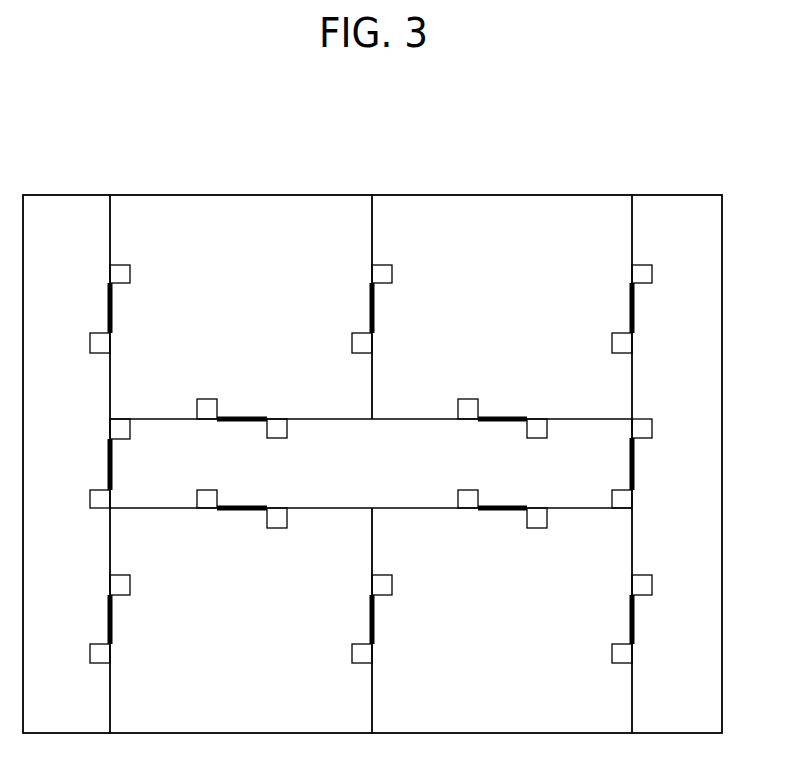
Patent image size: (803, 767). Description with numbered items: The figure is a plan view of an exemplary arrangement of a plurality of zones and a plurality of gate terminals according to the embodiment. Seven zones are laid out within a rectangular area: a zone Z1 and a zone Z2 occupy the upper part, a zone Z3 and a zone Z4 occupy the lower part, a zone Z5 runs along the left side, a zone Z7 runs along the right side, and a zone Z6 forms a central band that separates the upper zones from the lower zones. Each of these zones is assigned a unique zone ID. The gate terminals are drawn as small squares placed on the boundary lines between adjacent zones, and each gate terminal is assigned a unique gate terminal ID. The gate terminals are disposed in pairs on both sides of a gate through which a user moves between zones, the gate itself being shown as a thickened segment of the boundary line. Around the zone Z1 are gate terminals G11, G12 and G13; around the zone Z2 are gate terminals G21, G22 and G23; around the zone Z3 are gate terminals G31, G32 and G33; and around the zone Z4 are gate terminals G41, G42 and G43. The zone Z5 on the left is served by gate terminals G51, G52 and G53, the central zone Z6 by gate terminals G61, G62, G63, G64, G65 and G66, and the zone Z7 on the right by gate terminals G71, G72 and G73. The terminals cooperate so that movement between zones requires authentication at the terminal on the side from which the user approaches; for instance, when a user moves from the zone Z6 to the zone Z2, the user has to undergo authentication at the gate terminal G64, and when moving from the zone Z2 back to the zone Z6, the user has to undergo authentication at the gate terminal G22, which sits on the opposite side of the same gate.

The zone Z1 is at (238, 308).
The zone Z2 is at (500, 308).
The zone Z3 is at (238, 623).
The zone Z4 is at (500, 623).
The zone Z5 is at (65, 459).
The zone Z6 is at (372, 459).
The zone Z7 is at (675, 459).
The gate terminal G11 is at (130, 273).
The gate terminal G12 is at (205, 399).
The gate terminal G13 is at (361, 353).
The gate terminal G21 is at (392, 273).
The gate terminal G22 is at (466, 399).
The gate terminal G23 is at (621, 353).
The gate terminal G31 is at (130, 584).
The gate terminal G32 is at (279, 529).
The gate terminal G33 is at (361, 663).
The gate terminal G41 is at (392, 584).
The gate terminal G42 is at (539, 529).
The gate terminal G43 is at (621, 663).
The gate terminal G51 is at (100, 353).
The gate terminal G52 is at (100, 509).
The gate terminal G53 is at (100, 663).
The gate terminal G61 is at (130, 430).
The gate terminal G62 is at (281, 438).
The gate terminal G63 is at (217, 498).
The gate terminal G64 is at (541, 438).
The gate terminal G65 is at (478, 498).
The gate terminal G66 is at (619, 490).
The gate terminal G71 is at (652, 273).
The gate terminal G72 is at (652, 428).
The gate terminal G73 is at (652, 584).